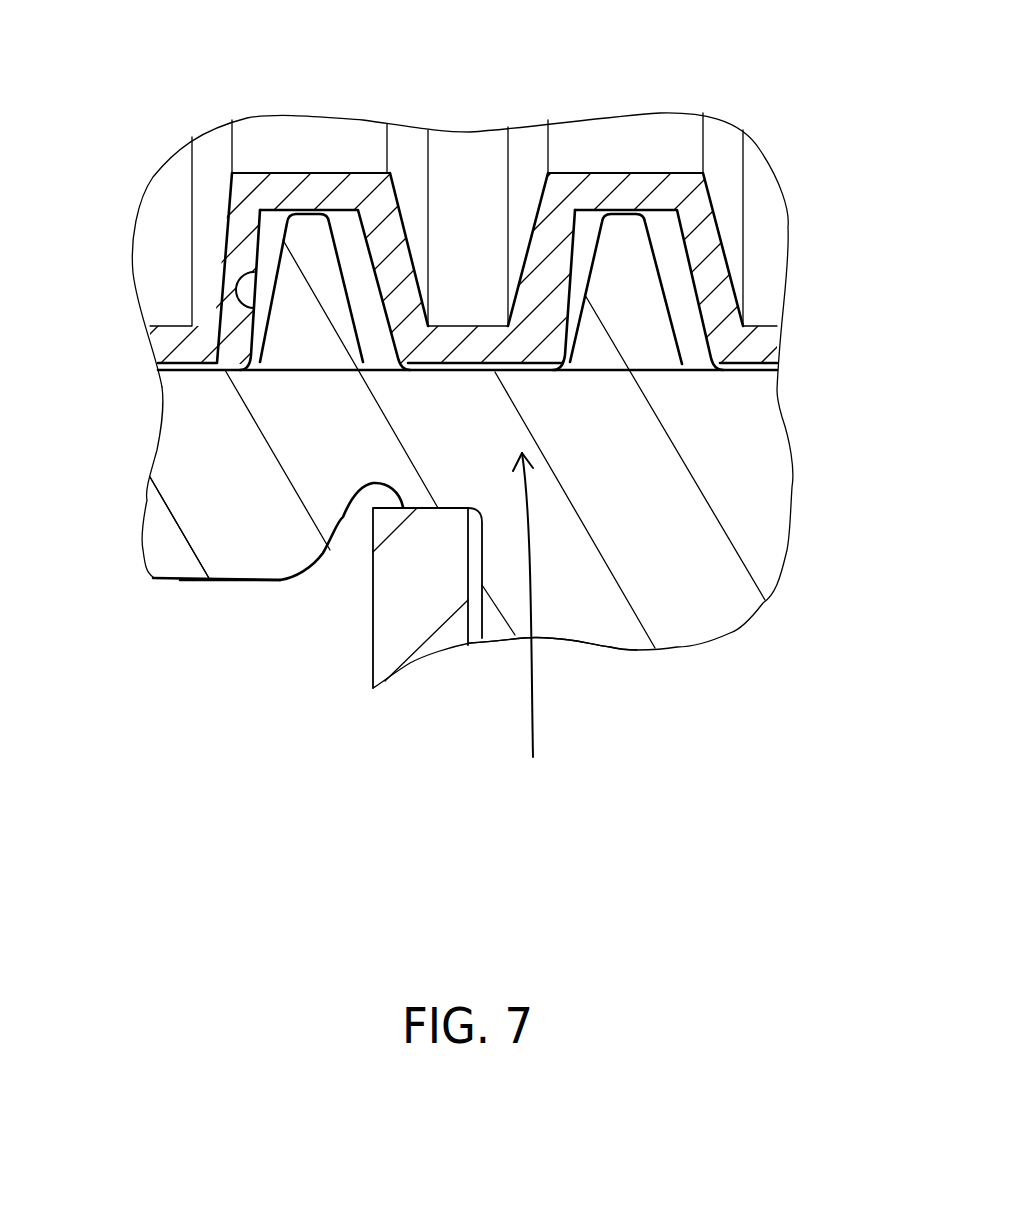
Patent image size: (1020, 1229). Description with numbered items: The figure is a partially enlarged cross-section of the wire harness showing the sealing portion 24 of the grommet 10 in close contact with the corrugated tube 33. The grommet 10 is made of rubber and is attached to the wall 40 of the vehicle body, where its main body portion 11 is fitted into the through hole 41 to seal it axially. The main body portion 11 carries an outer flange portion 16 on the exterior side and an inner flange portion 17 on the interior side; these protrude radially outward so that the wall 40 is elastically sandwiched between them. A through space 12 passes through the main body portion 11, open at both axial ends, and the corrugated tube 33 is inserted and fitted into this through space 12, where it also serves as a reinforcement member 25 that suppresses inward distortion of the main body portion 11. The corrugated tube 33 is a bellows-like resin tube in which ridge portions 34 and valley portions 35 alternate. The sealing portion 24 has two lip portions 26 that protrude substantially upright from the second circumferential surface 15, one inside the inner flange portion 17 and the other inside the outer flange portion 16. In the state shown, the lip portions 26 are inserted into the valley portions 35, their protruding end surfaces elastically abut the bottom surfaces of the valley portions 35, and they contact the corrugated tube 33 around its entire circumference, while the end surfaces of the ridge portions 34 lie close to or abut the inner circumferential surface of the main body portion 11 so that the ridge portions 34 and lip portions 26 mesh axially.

The grommet 10 is at (723, 617).
The main body portion 11 is at (248, 513).
The through space 12 is at (683, 132).
The second circumferential surface 15 is at (735, 363).
The outer flange portion 16 is at (608, 640).
The inner flange portion 17 is at (282, 568).
The sealing portion 24 is at (530, 626).
The reinforcement member 25 is at (483, 168).
The lip portions 26 is at (312, 235).
The corrugated tube 33 is at (468, 158).
The ridge portions 34 is at (422, 363).
The valley portions 35 is at (238, 308).
The wall 40 is at (402, 640).
The through hole 41 is at (338, 512).